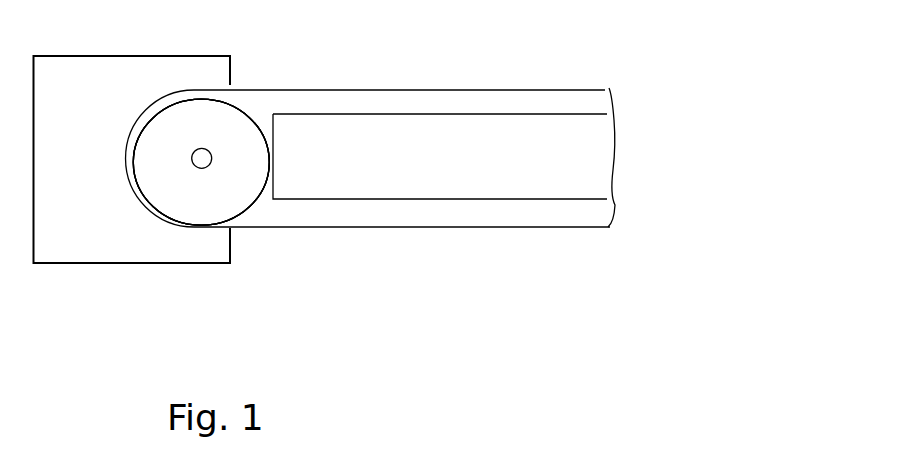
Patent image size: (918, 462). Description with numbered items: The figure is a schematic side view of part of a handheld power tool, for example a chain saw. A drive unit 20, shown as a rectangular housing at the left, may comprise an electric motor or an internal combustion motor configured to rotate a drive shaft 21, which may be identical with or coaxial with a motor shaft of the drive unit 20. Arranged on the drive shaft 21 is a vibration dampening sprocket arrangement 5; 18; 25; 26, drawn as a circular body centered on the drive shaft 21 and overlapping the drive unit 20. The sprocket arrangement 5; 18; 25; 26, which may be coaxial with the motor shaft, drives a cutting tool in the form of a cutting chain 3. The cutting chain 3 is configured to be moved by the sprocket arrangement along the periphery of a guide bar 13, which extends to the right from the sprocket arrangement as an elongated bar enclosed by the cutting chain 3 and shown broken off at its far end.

The cutting chain 3 is at (533, 226).
The vibration dampening sprocket arrangement 5 is at (243, 192).
The guide bar 13 is at (423, 194).
The vibration dampening sprocket arrangement 18 is at (201, 162).
The drive unit 20 is at (120, 263).
The drive shaft 21 is at (202, 158).
The vibration dampening sprocket arrangement 25 is at (201, 162).
The sprocket arrangement 26 is at (201, 162).